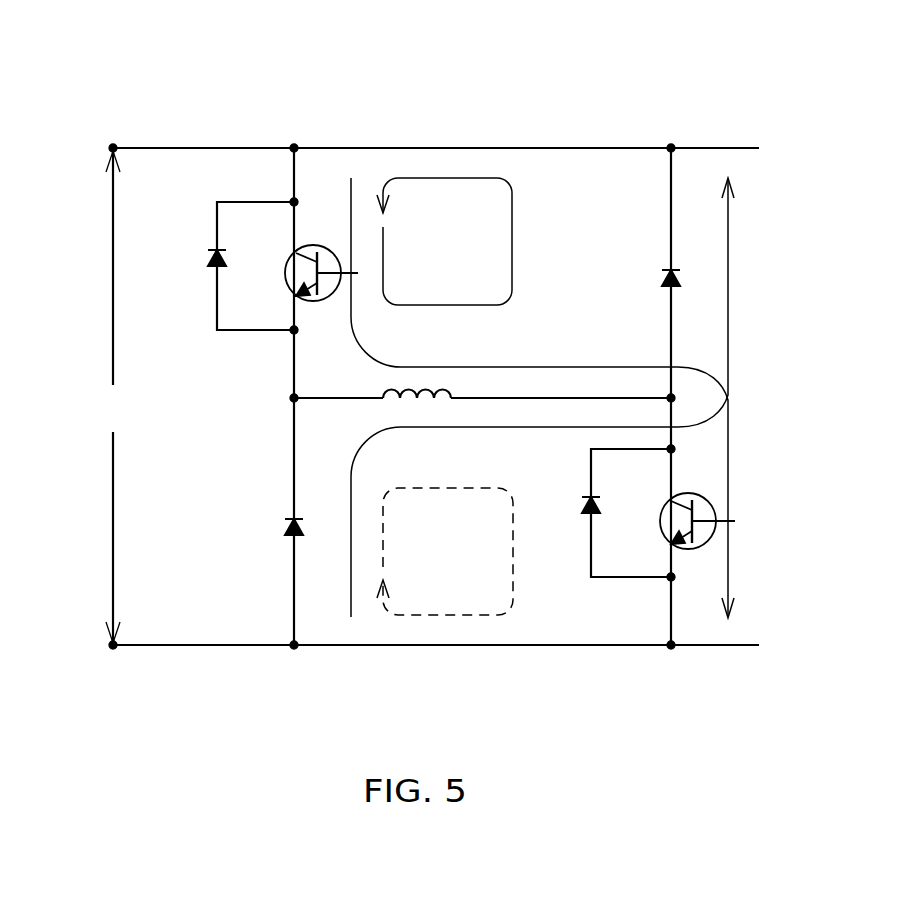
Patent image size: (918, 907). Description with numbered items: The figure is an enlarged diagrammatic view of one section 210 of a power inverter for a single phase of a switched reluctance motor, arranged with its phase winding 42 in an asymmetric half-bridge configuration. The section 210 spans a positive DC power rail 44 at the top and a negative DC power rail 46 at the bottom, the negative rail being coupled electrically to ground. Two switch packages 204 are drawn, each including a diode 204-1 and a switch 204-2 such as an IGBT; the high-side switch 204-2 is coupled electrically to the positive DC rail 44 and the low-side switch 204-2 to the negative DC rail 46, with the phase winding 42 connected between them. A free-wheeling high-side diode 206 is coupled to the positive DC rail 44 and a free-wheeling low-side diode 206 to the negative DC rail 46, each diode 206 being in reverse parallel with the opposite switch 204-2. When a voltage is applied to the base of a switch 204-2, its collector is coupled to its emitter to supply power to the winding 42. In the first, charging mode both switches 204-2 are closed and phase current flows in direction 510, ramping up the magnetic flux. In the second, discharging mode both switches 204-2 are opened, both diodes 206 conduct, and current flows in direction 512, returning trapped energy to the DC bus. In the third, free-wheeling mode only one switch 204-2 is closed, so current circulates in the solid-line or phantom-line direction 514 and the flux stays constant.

The section 210 is at (163, 92).
The positive DC power rail 44 is at (224, 148).
The negative DC power rail 46 is at (222, 647).
The phase winding 42 is at (385, 392).
The switch package 204 is at (227, 302).
The diode 204-1 is at (212, 258).
The switch 204-2 is at (287, 262).
The free-wheeling power diode 206 is at (670, 278).
The direction of phase current in first operational mode 510 is at (728, 462).
The direction of phase current in second operational mode 512 is at (728, 305).
The direction of current in third operational mode 514 is at (465, 180).